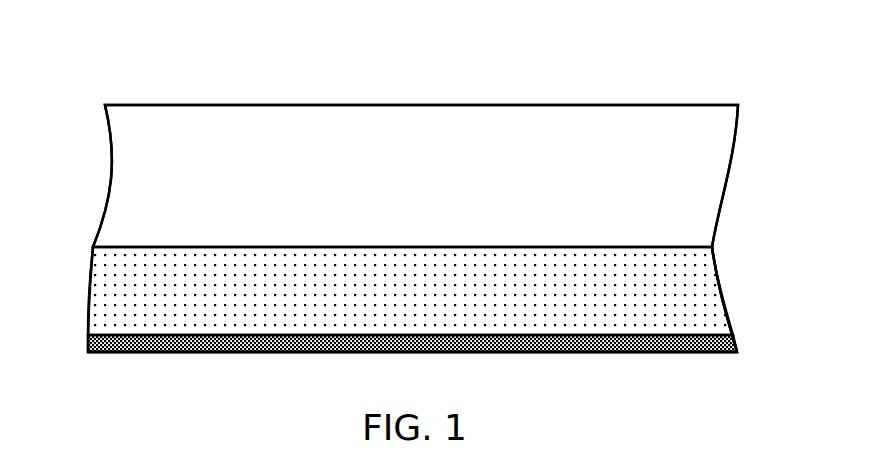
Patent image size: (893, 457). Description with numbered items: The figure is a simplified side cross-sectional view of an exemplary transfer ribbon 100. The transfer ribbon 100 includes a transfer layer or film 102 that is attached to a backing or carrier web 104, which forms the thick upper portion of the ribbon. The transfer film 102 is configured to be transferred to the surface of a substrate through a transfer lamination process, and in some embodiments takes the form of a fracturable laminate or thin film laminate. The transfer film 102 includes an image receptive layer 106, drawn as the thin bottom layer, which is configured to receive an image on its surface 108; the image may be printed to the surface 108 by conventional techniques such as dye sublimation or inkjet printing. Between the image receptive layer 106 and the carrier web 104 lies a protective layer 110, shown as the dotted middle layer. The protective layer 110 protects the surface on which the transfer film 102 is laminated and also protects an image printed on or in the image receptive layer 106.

The transfer ribbon 100 is at (724, 48).
The transfer film 102 is at (784, 341).
The carrier web 104 is at (697, 183).
The image receptive layer 106 is at (113, 352).
The surface 108 is at (657, 364).
The protective layer 110 is at (93, 300).